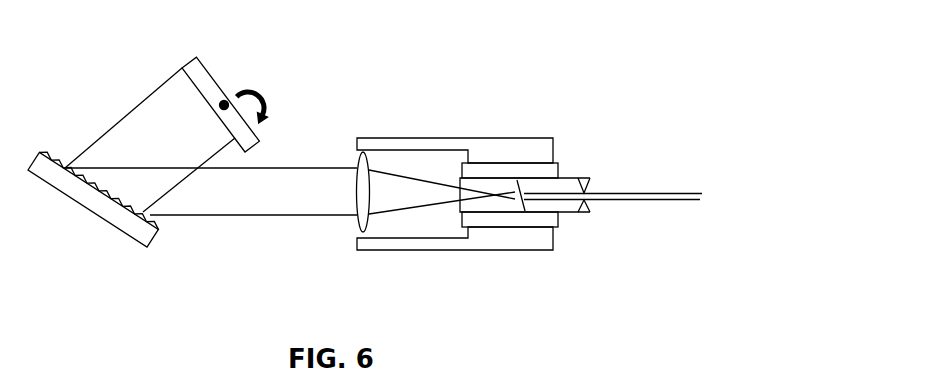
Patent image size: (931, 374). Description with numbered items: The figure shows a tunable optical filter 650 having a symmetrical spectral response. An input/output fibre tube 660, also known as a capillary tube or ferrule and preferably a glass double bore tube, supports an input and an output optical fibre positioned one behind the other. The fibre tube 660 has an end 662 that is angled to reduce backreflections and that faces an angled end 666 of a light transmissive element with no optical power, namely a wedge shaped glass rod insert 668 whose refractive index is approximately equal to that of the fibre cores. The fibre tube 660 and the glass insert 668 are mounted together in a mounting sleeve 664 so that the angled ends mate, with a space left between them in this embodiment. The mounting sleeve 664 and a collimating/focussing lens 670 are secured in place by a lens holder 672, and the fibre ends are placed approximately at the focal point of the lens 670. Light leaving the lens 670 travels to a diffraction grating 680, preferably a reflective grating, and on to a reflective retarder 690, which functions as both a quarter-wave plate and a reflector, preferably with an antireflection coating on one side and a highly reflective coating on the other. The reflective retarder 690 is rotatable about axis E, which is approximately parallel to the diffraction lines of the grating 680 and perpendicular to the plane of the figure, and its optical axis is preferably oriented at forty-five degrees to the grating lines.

The optical filter 650 is at (374, 51).
The reflective retarder 690 is at (183, 64).
The axis E is at (224, 100).
The diffraction grating 680 is at (148, 247).
The collimating/focussing lens 670 is at (352, 225).
The lens holder 672 is at (494, 138).
The mounting sleeve 664 is at (557, 171).
The input/output fibre tube 660 is at (570, 213).
The angled end face 662 is at (523, 213).
The angled end 666 is at (513, 182).
The wedge shaped glass rod insert 668 is at (490, 213).